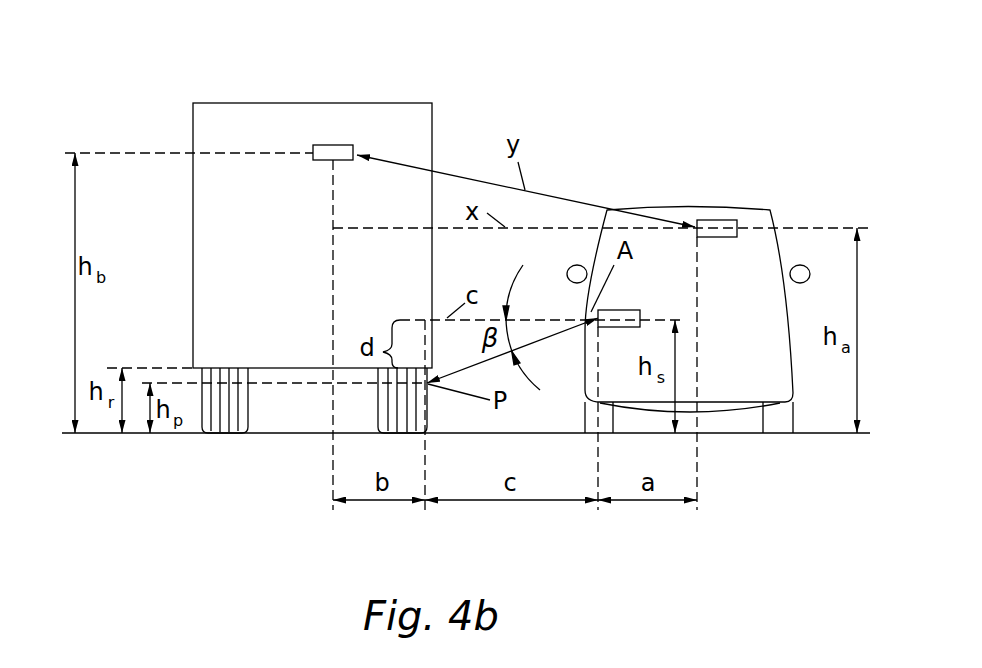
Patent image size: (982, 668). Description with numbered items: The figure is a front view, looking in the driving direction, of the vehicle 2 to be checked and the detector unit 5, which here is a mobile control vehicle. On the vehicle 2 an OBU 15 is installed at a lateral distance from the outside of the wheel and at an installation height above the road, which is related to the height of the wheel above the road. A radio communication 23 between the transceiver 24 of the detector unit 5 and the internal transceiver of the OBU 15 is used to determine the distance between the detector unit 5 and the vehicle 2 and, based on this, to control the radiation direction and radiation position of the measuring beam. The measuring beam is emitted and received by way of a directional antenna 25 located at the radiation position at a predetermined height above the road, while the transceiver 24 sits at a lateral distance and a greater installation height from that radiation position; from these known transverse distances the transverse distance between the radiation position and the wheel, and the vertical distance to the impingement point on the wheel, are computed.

The vehicle 2 is at (245, 102).
The OBU 15 is at (325, 160).
The radio communication 23 is at (558, 197).
The detector unit 5 is at (772, 210).
The transceiver 24 is at (717, 220).
The directional antenna 25 is at (623, 310).